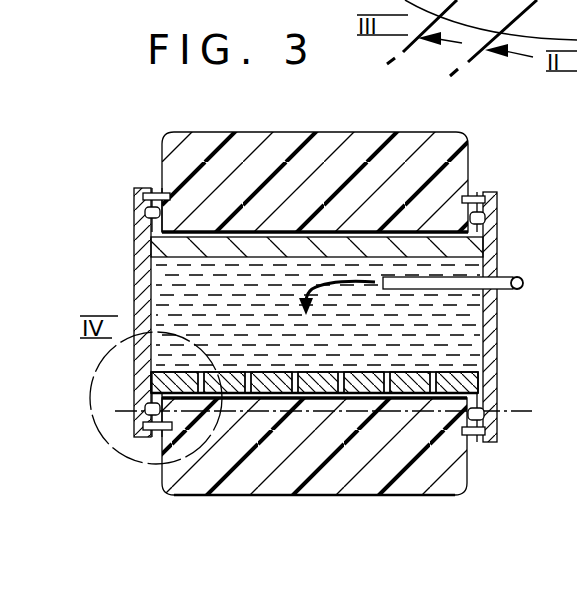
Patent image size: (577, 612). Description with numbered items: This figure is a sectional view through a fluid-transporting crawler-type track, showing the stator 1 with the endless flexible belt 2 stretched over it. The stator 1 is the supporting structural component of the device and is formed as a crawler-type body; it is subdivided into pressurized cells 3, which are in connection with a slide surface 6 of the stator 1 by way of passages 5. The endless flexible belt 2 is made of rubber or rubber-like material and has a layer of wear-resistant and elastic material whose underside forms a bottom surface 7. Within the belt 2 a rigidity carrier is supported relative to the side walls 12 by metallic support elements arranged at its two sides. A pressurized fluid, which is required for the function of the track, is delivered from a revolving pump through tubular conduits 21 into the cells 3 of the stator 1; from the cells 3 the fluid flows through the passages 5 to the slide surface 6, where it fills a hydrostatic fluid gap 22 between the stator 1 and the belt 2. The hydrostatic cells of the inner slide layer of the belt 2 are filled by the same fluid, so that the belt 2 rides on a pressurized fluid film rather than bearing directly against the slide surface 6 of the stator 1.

The stator 1 is at (442, 152).
The endless flexible belt 2 is at (172, 476).
The pressurized cell 3 is at (163, 272).
The passage 5 is at (387, 393).
The slide surface 6 is at (445, 228).
The bottom surface 7 is at (312, 496).
The side wall 12 is at (143, 305).
The tubular conduit 21 is at (458, 281).
The hydrostatic fluid gap 22 is at (200, 232).